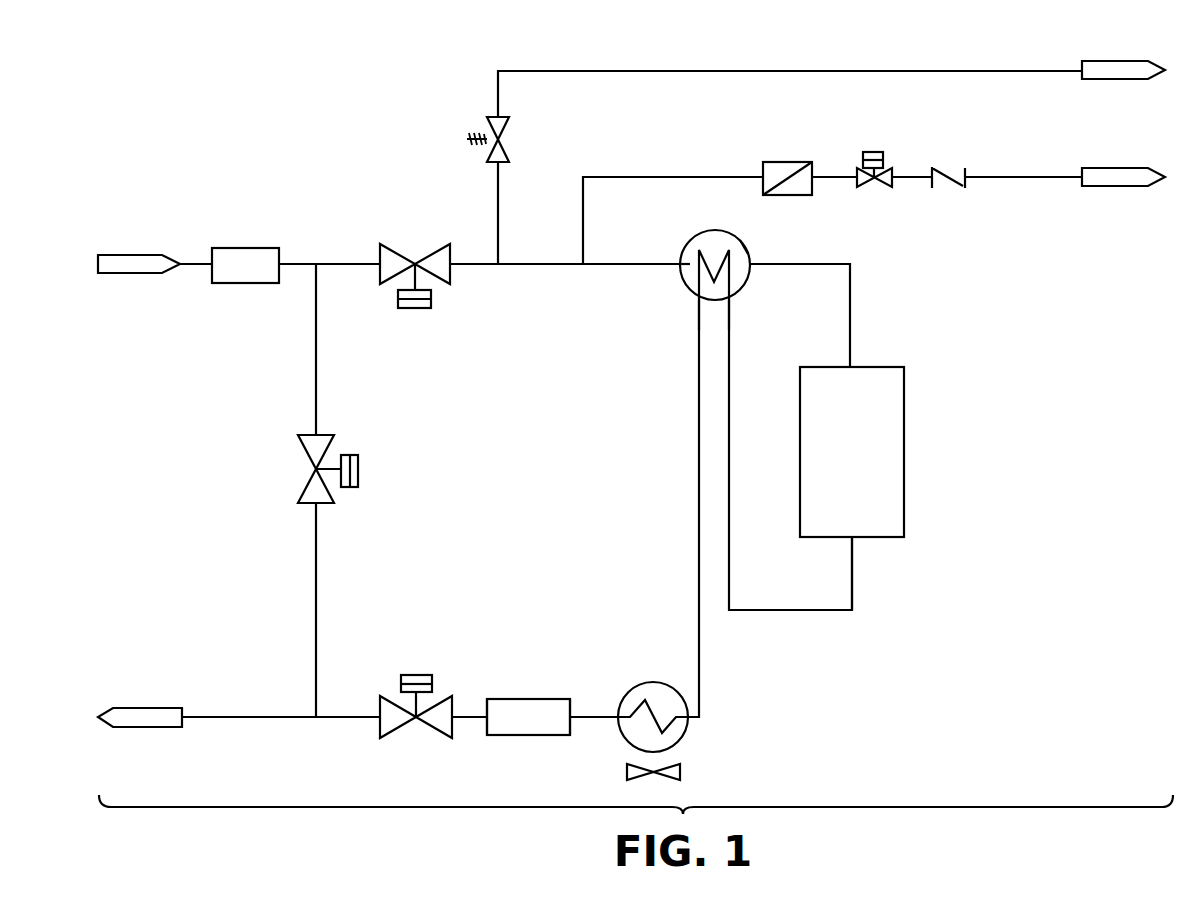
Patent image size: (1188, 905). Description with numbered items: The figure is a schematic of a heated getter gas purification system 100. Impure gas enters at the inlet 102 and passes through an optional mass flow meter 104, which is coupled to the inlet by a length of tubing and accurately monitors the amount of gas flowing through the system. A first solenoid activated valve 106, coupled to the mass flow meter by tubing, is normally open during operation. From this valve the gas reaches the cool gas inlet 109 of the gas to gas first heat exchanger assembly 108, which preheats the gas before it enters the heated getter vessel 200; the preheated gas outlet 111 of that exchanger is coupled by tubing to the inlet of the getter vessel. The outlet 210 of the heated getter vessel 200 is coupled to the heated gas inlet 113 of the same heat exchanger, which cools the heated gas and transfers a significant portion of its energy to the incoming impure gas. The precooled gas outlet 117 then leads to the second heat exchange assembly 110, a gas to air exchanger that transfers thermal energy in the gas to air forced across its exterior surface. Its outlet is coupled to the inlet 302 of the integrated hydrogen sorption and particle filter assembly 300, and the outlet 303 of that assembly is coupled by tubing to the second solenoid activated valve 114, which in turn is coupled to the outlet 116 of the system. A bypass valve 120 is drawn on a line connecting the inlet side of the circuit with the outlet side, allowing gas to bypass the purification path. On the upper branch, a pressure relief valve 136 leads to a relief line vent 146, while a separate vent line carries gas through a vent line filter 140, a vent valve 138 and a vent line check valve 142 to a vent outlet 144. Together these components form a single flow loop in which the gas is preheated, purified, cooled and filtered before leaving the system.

The gas purification system 100 is at (262, 152).
The inlet 102 is at (140, 276).
The mass flow meter 104 is at (253, 285).
The first solenoid activated valve 106 is at (450, 270).
The first heat exchanger assembly 108 is at (692, 236).
The cool gas inlet 109 is at (680, 266).
The second heat exchange assembly 110 is at (655, 682).
The preheated gas outlet 111 is at (748, 254).
The heated gas inlet 113 is at (732, 303).
The second solenoid activated valve 114 is at (416, 673).
The outlet 116 is at (157, 705).
The precooled gas outlet 117 is at (697, 303).
The bypass valve 120 is at (360, 470).
The pressure relief valve 136 is at (502, 127).
The vent valve 138 is at (868, 150).
The vent line filter 140 is at (778, 166).
The vent line check valve 142 is at (942, 172).
The vent outlet 144 is at (1121, 188).
The relief line vent 146 is at (1121, 80).
The heated getter vessel 200 is at (905, 383).
The outlet of the heated getter vessel 210 is at (853, 540).
The integrated hydrogen sorption and particle filter assembly 300 is at (553, 698).
The inlet of the filter assembly 302 is at (574, 702).
The outlet of the filter assembly 303 is at (485, 735).